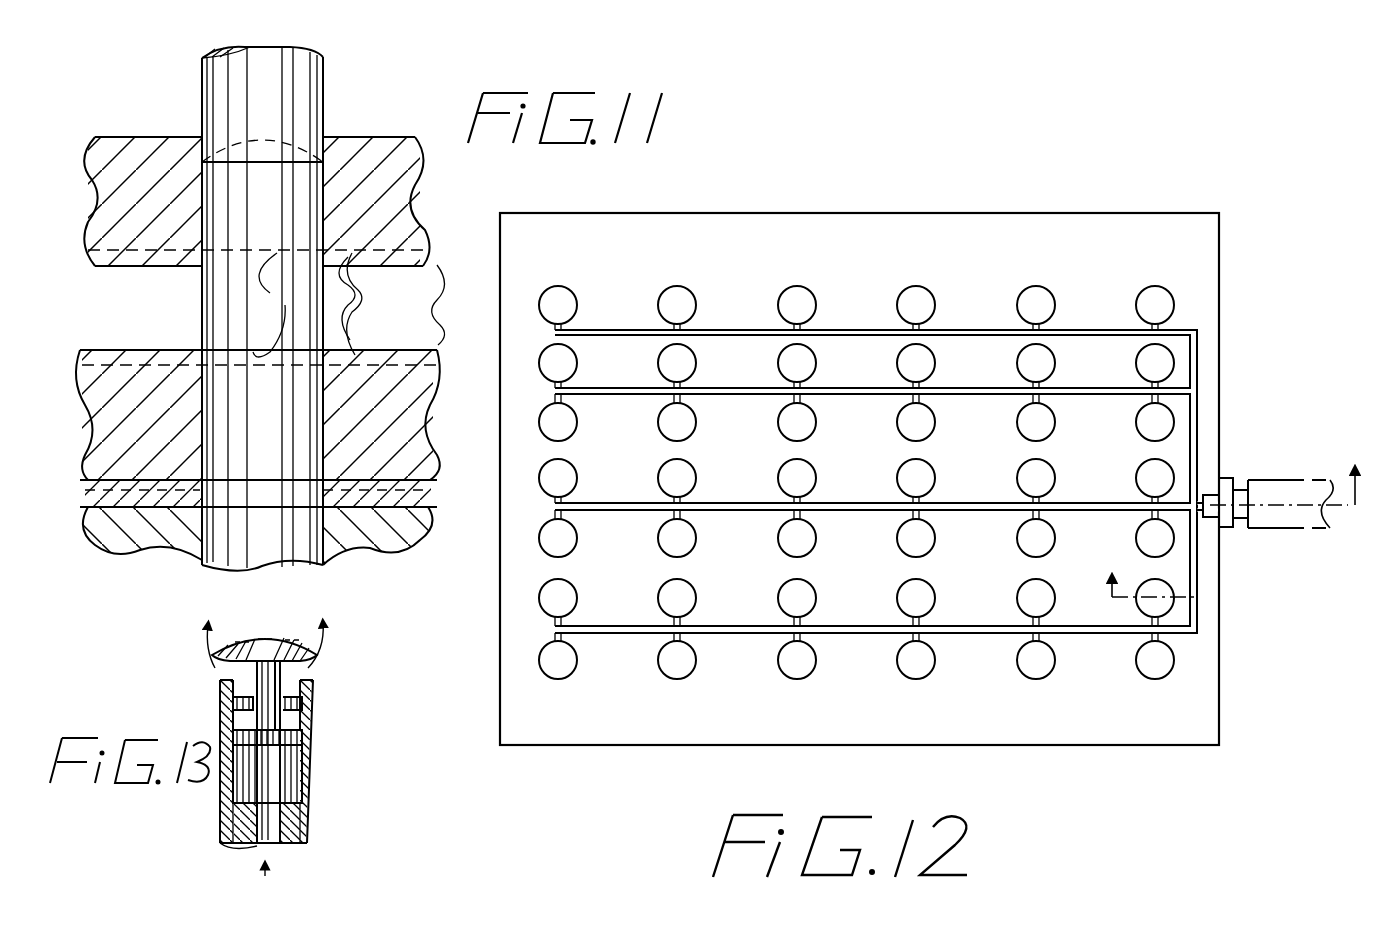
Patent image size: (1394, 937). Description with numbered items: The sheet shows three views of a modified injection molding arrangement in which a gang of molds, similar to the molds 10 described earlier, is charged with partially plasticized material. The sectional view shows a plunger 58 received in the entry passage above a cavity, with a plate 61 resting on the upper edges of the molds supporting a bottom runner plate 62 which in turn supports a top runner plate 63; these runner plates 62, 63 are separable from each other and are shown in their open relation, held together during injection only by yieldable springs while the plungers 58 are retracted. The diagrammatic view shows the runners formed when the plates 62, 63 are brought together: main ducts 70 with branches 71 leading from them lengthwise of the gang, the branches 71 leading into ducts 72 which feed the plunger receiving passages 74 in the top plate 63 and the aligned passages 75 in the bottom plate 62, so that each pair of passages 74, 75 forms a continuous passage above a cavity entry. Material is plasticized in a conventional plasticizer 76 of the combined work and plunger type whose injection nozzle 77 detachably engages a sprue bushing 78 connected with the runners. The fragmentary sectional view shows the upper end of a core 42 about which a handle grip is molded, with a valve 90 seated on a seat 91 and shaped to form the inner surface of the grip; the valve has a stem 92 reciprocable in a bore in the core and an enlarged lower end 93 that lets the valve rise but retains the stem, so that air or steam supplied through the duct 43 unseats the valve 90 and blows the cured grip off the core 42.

In FIG. 11, the plunger 58 is at (318, 107).
In FIG. 11, the top runner plate 63 is at (403, 240).
In FIG. 11, the bottom runner plate 62 is at (420, 393).
In FIG. 12, the bottom runner plate 62 is at (983, 213).
In FIG. 11, the plate 61 is at (417, 490).
In FIG. 11, the duct 72 is at (304, 305).
In FIG. 12, the duct 72 is at (1163, 325).
In FIG. 11, the main duct 70 is at (396, 304).
In FIG. 12, the main duct 70 is at (1192, 438).
In FIG. 12, the branch 71 is at (1080, 330).
In FIG. 12, the passage 75 is at (923, 295).
In FIG. 12, the plunger receiving passage 74 is at (1175, 362).
In FIG. 12, the sprue bushing 78 is at (1223, 478).
In FIG. 12, the injection nozzle 77 is at (1240, 490).
In FIG. 12, the plasticizer 76 is at (1267, 480).
In FIG. 12, the mold 10 is at (1234, 511).
In FIG. 13, the core 42 is at (300, 815).
In FIG. 13, the duct 43 is at (265, 843).
In FIG. 13, the enlarged lower end 93 is at (273, 740).
In FIG. 13, the valve 90 is at (265, 635).
In FIG. 13, the seat 91 is at (250, 682).
In FIG. 13, the stem 92 is at (287, 690).